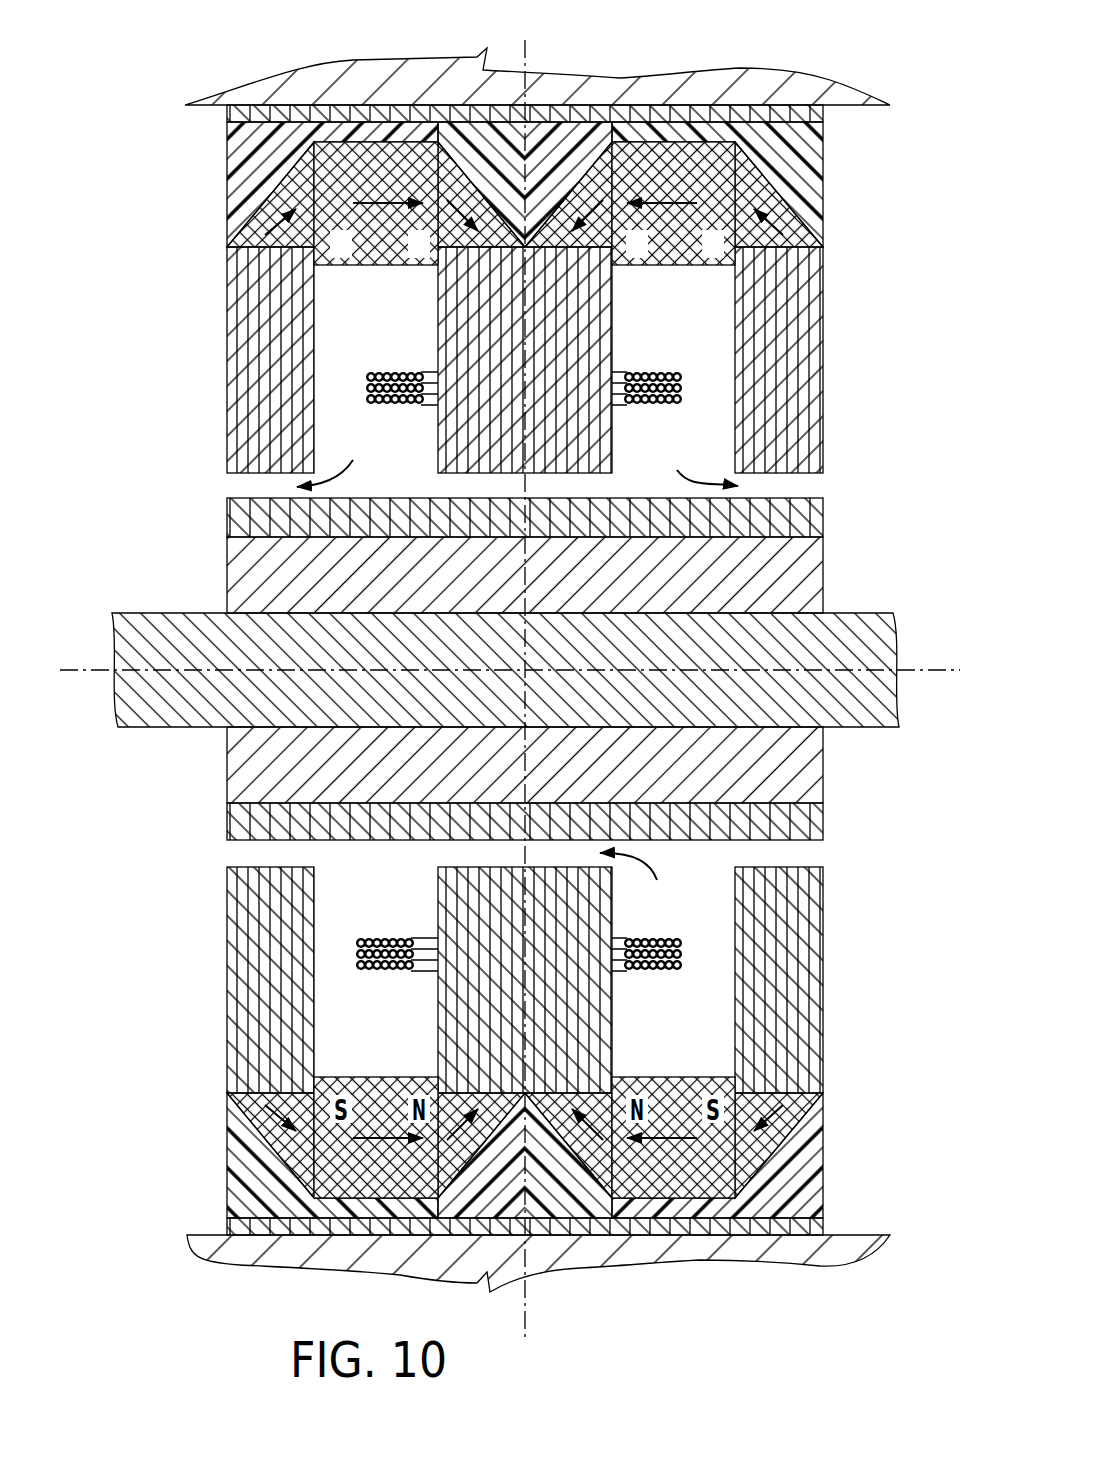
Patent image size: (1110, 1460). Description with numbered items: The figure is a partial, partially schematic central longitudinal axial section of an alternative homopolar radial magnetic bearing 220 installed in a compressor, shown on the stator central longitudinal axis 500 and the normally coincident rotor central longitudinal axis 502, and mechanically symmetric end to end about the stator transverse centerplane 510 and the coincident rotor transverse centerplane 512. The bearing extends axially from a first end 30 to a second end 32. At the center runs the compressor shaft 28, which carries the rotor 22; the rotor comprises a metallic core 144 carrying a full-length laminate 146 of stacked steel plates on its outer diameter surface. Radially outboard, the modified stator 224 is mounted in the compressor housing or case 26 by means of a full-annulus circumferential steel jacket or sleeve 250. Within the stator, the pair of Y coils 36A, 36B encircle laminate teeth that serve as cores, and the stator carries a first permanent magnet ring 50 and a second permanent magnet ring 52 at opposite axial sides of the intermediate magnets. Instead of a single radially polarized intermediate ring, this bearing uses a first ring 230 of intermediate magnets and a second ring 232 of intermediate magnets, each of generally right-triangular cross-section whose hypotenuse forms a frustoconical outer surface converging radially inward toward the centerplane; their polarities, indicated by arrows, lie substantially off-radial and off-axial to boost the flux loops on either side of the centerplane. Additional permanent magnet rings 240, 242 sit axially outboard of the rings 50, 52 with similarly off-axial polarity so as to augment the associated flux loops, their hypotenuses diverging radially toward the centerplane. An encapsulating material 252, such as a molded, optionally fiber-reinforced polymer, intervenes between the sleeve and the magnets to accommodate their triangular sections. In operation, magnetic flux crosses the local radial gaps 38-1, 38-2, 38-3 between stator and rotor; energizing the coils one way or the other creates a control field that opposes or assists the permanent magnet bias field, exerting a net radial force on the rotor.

The rotor 22 is at (582, 619).
The housing 26 is at (360, 70).
The shaft 28 is at (180, 622).
The first end 30 is at (278, 164).
The second end 32 is at (781, 197).
The Y coil 36A is at (697, 950).
The Y coil 36B is at (700, 375).
The radial gap 38-1 is at (636, 882).
The radial gap 38-2 is at (334, 459).
The radial gap 38-3 is at (701, 462).
The first permanent magnet ring 50 is at (380, 172).
The second permanent magnet ring 52 is at (600, 188).
The metallic core 144 is at (800, 582).
The laminate 146 is at (552, 516).
The alternative bearing 220 is at (510, 149).
The stator 224 is at (600, 367).
The first ring of intermediate magnets 230 is at (457, 193).
The second ring of intermediate magnets 232 is at (583, 130).
The permanent magnet ring 240 is at (263, 227).
The permanent magnet ring 242 is at (835, 232).
The sleeve 250 is at (780, 113).
The encapsulating material 252 is at (812, 172).
The stator central longitudinal axis 500 is at (510, 750).
The rotor central longitudinal axis 502 is at (75, 673).
The stator transverse centerplane 510 is at (584, 695).
The rotor transverse centerplane 512 is at (527, 1302).